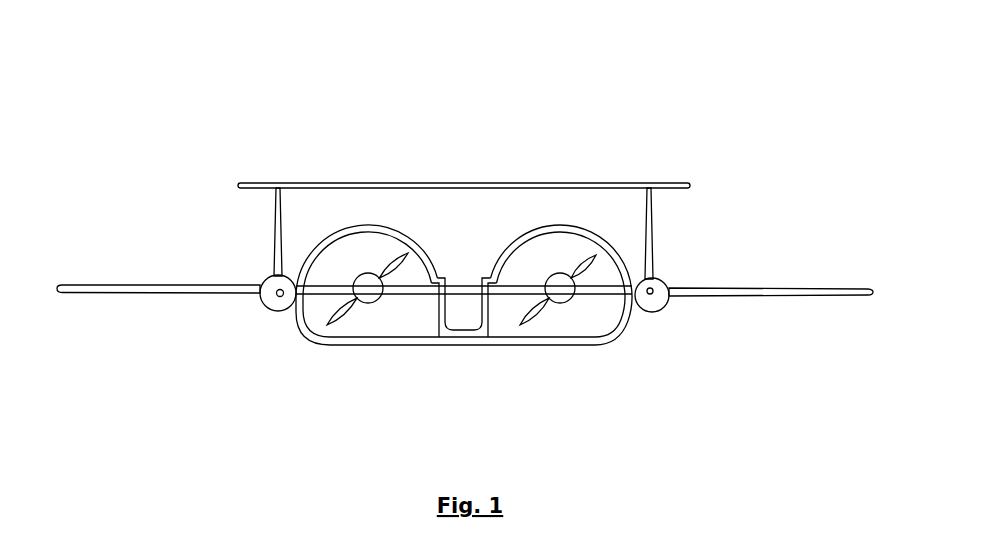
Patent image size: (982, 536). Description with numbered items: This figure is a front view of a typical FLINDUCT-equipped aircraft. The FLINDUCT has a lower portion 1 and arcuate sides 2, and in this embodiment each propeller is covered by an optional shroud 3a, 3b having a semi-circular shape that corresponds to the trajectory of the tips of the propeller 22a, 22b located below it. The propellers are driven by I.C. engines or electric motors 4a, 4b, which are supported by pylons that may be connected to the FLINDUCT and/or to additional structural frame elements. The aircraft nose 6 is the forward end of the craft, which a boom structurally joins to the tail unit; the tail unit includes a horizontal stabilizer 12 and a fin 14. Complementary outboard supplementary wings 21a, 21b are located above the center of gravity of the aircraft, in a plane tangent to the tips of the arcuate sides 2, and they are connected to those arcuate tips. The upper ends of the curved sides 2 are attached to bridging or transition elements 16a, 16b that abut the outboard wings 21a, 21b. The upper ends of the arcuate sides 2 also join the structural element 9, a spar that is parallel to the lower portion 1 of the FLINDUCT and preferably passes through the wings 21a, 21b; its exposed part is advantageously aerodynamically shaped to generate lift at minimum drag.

The lower portion of the FLINDUCT 1 is at (369, 340).
The arcuate sides of the FLINDUCT 2 is at (627, 320).
The shroud 3a is at (358, 229).
The shroud 3b is at (570, 229).
The I.C. engine/electric motor 4a is at (367, 279).
The I.C. engine/electric motor 4b is at (558, 282).
The aircraft nose 6 is at (460, 315).
The structural element, spar 9 is at (508, 287).
The horizontal stabilizer 12 is at (458, 185).
The fin 14 is at (650, 215).
The elongated structural element, boom, fuselage 16a is at (272, 300).
The elongated structural element, boom, fuselage 16b is at (657, 300).
The supplementary wing 21a is at (162, 288).
The supplementary wing 21b is at (745, 290).
The propeller 22a is at (395, 258).
The propeller 22b is at (597, 259).